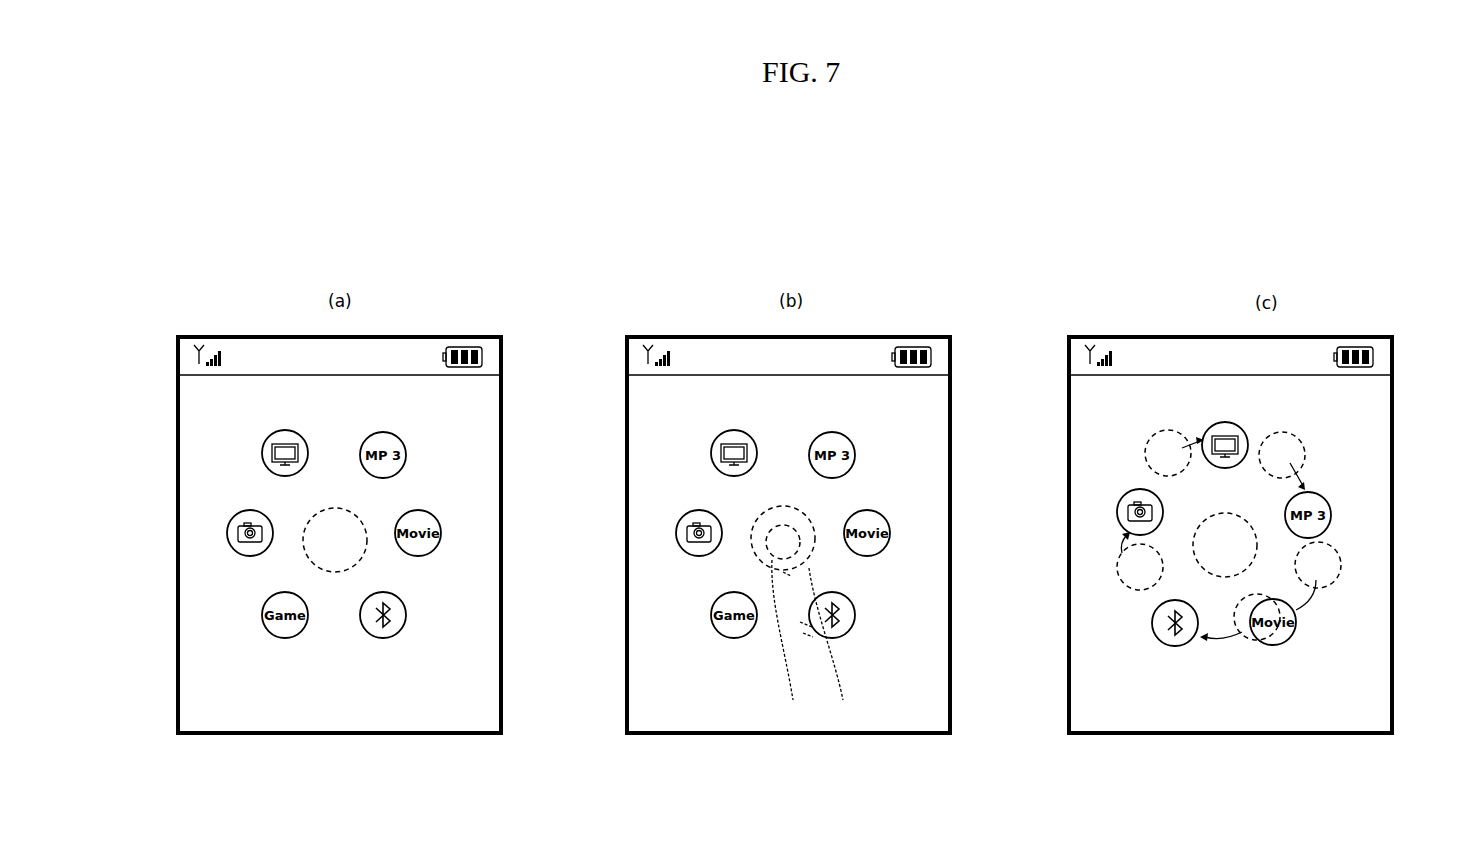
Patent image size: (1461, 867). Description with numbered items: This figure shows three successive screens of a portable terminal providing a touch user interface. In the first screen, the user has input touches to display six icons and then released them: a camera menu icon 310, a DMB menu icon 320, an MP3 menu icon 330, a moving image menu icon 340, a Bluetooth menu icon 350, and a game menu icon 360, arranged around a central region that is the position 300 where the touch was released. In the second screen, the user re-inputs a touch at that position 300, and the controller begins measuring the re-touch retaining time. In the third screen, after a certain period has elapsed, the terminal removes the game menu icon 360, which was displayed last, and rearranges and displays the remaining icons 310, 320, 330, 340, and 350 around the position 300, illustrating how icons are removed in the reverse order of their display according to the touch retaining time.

The position where the touch has been released 300 is at (333, 535).
The camera menu icon 310 is at (227, 533).
The Digital Multimedia Broadcasting (DMB) menu icon 320 is at (262, 453).
The MP3 menu icon 330 is at (406, 455).
The moving image menu icon 340 is at (441, 533).
The Bluetooth menu icon 350 is at (406, 615).
The game menu icon 360 is at (262, 615).